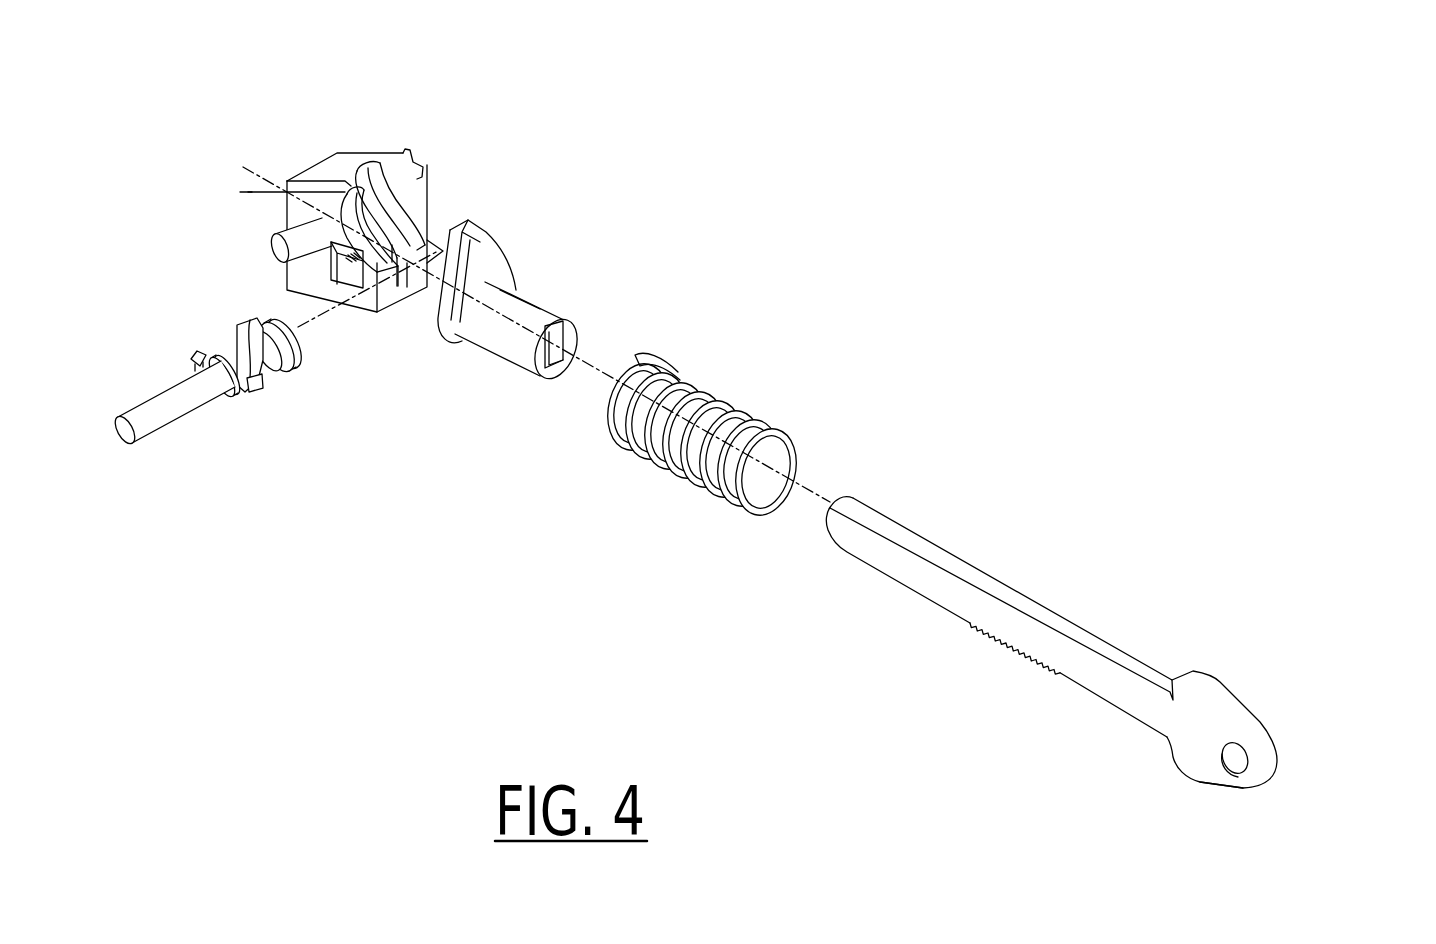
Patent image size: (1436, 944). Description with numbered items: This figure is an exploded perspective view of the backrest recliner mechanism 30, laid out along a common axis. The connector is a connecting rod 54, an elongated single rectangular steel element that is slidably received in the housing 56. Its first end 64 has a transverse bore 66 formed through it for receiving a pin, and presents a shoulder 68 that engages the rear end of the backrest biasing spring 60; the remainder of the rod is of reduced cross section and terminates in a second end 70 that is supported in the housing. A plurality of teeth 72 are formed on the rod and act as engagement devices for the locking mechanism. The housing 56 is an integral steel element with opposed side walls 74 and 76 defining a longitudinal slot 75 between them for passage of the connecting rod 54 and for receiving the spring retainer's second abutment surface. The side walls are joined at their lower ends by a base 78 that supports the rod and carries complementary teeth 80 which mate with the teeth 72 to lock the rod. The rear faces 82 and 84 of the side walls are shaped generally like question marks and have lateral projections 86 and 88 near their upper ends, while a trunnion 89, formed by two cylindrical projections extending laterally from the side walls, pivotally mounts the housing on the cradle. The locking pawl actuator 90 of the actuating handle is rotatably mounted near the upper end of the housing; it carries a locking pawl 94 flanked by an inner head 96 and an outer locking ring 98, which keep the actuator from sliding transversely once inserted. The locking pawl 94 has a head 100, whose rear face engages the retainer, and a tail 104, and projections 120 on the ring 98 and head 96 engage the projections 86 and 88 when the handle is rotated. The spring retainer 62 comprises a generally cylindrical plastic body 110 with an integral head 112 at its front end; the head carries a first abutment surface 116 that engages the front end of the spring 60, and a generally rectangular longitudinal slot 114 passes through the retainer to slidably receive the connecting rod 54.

The backrest recliner mechanism 30 is at (796, 364).
The connecting rod 54 is at (1114, 611).
The housing 56 is at (342, 151).
The backrest biasing spring 60 is at (712, 490).
The spring retainer 62 is at (621, 329).
The first end 64 is at (1224, 690).
The transverse bore 66 is at (1246, 757).
The shoulder 68 is at (1167, 758).
The second end 70 is at (867, 500).
The teeth 72 is at (1008, 643).
The side wall 74 is at (305, 172).
The longitudinal slot 75 is at (430, 235).
The side wall 76 is at (372, 150).
The base 78 is at (401, 268).
The teeth 80 is at (273, 247).
The rear face 82 is at (380, 262).
The rear face 84 is at (498, 258).
The lateral projection 86 is at (248, 192).
The lateral projection 88 is at (415, 155).
The trunnion 89 is at (244, 192).
The locking pawl actuator 90 is at (175, 430).
The locking pawl 94 is at (238, 330).
The inner head 96 is at (293, 372).
The outer locking ring 98 is at (212, 372).
The head 100 is at (263, 358).
The tail 104 is at (252, 390).
The cylindrical body 110 is at (575, 335).
The head 112 is at (455, 345).
The longitudinal slot 114 is at (576, 337).
The first abutment surface 116 is at (541, 295).
The projections 120 is at (197, 352).